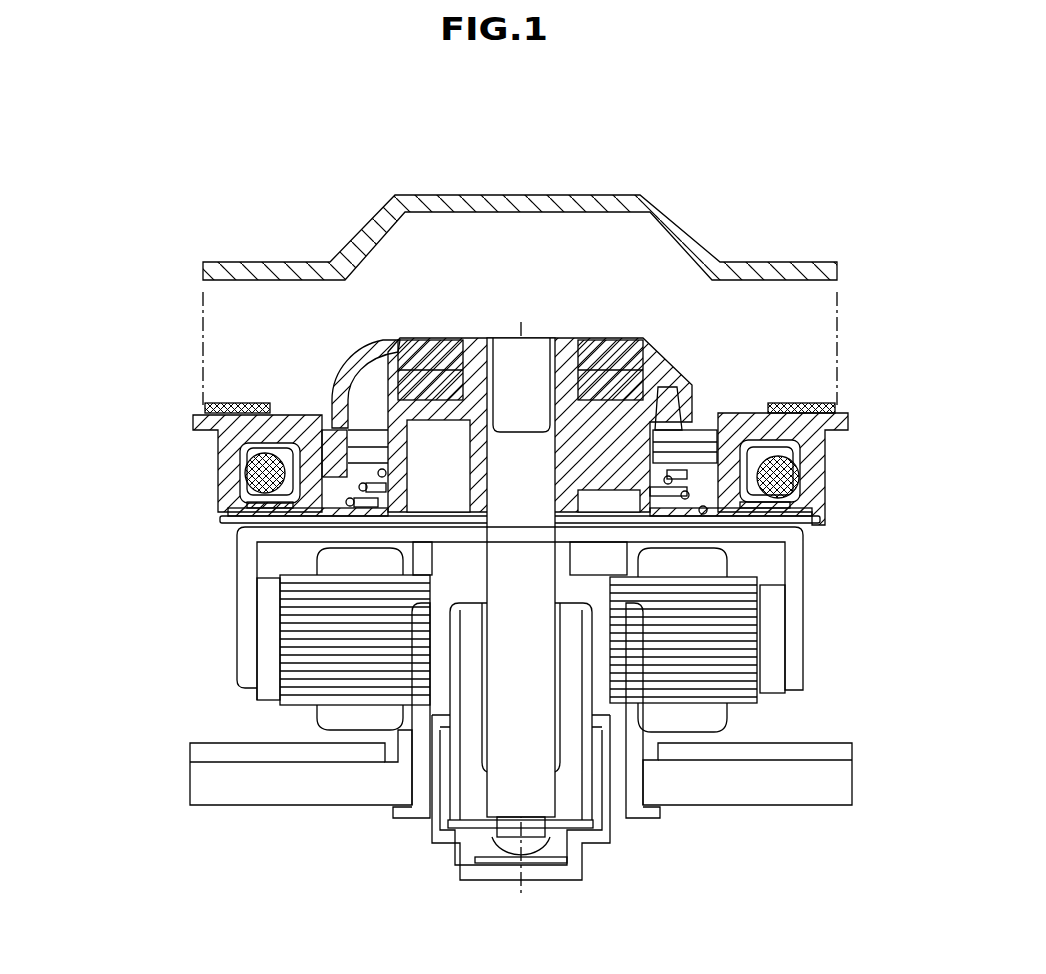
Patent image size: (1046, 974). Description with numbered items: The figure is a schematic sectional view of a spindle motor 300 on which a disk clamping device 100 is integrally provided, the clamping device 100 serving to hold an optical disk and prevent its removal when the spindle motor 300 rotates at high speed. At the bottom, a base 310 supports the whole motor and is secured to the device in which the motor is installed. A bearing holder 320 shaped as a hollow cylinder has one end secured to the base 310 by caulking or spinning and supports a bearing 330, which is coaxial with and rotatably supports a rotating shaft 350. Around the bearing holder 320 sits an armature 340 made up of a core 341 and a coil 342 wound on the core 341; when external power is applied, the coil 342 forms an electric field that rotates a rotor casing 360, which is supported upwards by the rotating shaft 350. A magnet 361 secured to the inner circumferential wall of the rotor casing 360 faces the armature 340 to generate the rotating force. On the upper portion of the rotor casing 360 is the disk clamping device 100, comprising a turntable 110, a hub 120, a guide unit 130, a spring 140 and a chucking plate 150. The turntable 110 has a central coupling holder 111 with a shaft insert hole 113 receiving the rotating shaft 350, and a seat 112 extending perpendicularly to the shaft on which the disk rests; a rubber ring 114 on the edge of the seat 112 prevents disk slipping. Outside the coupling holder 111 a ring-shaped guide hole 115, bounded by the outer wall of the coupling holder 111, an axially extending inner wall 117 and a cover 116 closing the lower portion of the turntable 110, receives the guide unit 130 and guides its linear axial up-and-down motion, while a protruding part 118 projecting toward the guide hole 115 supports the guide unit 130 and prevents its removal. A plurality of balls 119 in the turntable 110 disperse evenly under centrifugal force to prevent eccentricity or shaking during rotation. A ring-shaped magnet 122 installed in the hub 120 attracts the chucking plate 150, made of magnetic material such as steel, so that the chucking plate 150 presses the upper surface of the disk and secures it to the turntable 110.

The disk clamping device 100 is at (319, 129).
The turntable 110 is at (203, 450).
The coupling holder 111 is at (440, 405).
The seat 112 is at (760, 432).
The shaft insert hole 113 is at (540, 382).
The rubber ring 114 is at (800, 403).
The guide hole 115 is at (240, 503).
The cover 116 is at (228, 534).
The inner wall 117 is at (243, 480).
The protruding part 118 is at (322, 422).
The balls 119 is at (745, 475).
The hub 120 is at (668, 370).
The magnet 122 is at (445, 385).
The guide unit 130 is at (318, 455).
The spring 140 is at (706, 488).
The chucking plate 150 is at (705, 210).
The spindle motor 300 is at (502, 736).
The base 310 is at (250, 792).
The bearing holder 320 is at (410, 778).
The bearing 330 is at (463, 786).
The armature 340 is at (404, 641).
The core 341 is at (318, 662).
The coil 342 is at (330, 727).
The rotating shaft 350 is at (507, 794).
The rotor casing 360 is at (232, 588).
The magnet 361 is at (265, 633).